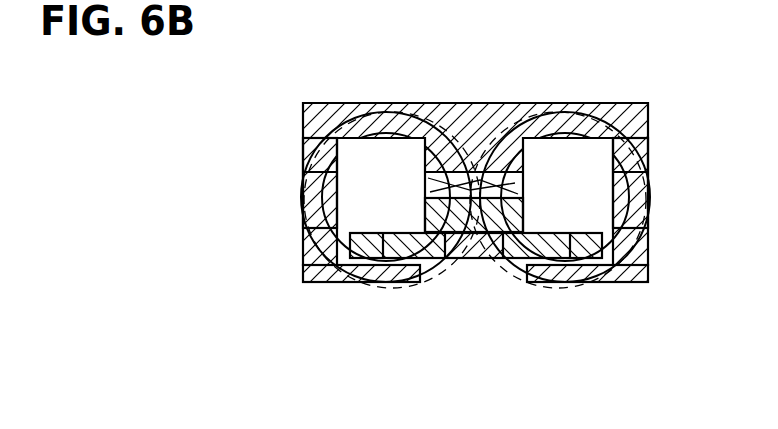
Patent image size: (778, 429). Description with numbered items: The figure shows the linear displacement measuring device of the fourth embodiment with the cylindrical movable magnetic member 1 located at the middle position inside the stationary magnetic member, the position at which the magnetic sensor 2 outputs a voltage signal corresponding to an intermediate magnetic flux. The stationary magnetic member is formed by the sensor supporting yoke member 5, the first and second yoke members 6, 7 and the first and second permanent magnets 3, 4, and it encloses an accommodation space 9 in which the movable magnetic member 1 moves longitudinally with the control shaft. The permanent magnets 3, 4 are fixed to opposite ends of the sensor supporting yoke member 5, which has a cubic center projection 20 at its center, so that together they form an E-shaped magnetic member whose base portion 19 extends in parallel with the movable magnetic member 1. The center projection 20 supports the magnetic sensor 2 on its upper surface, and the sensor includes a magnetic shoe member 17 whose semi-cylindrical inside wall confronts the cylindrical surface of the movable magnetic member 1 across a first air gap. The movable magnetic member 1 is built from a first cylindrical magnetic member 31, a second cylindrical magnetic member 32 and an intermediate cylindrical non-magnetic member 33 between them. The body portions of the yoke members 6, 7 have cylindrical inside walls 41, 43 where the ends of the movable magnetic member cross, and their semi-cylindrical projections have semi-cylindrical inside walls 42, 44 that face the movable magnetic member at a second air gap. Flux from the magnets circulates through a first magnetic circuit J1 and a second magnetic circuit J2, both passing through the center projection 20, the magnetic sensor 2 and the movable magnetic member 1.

The movable magnetic member 1 is at (430, 352).
The magnetic sensor 2 is at (466, 176).
The first permanent magnet 3 is at (300, 160).
The second permanent magnet 4 is at (652, 158).
The sensor supporting yoke member 5 is at (462, 63).
The first yoke member 6 is at (300, 283).
The second yoke member 7 is at (647, 283).
The accommodation space 9 is at (398, 220).
The magnetic shoe member 17 is at (523, 209).
The base portion 19 is at (558, 103).
The center projection 20 is at (470, 182).
The first cylindrical magnetic member 31 is at (421, 259).
The second cylindrical magnetic member 32 is at (541, 259).
The intermediate cylindrical non-magnetic member 33 is at (471, 259).
The cylindrical inside wall 41 is at (340, 261).
The semi-cylindrical inside wall 42 is at (383, 260).
The cylindrical inside wall 43 is at (633, 283).
The semi-cylindrical inside wall 44 is at (575, 259).
The first magnetic circuit J1 is at (305, 229).
The second magnetic circuit J2 is at (645, 231).